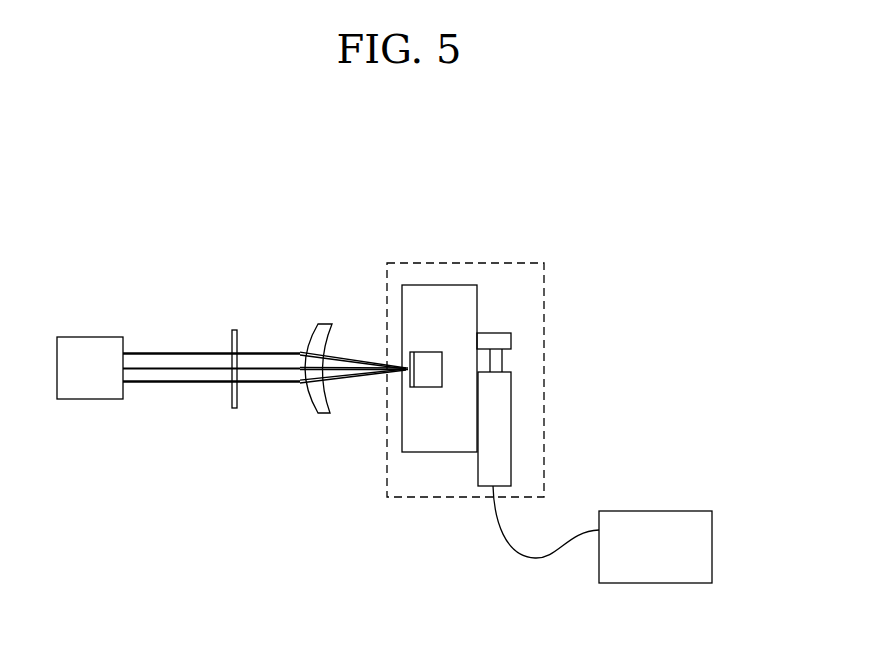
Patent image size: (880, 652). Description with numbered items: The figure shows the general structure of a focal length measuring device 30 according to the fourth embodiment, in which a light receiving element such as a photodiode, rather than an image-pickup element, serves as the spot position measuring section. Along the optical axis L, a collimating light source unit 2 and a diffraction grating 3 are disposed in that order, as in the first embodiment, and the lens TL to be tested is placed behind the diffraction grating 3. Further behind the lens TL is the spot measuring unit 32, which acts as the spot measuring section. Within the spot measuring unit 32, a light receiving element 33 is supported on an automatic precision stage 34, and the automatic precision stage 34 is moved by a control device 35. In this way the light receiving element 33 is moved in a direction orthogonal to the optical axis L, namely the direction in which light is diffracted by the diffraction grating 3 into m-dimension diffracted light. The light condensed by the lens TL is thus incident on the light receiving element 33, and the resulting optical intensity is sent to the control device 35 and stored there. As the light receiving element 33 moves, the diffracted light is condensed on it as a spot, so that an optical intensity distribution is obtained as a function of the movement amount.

The collimating light source unit 2 is at (93, 337).
The optical axis L is at (166, 370).
The diffraction grating 3 is at (238, 330).
The lens to be tested TL is at (323, 355).
The focal length measuring device 30 is at (349, 220).
The spot measuring unit 32 is at (503, 263).
The light receiving element 33 is at (432, 387).
The automatic precision stage 34 is at (437, 452).
The control device 35 is at (670, 511).